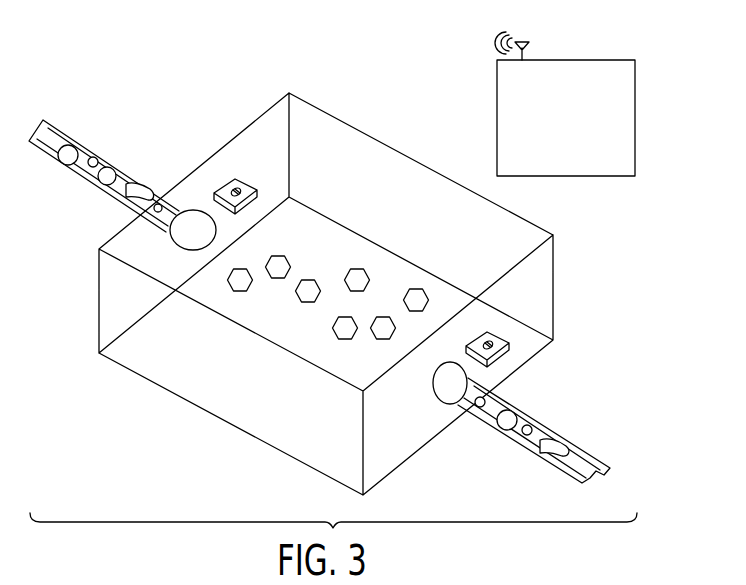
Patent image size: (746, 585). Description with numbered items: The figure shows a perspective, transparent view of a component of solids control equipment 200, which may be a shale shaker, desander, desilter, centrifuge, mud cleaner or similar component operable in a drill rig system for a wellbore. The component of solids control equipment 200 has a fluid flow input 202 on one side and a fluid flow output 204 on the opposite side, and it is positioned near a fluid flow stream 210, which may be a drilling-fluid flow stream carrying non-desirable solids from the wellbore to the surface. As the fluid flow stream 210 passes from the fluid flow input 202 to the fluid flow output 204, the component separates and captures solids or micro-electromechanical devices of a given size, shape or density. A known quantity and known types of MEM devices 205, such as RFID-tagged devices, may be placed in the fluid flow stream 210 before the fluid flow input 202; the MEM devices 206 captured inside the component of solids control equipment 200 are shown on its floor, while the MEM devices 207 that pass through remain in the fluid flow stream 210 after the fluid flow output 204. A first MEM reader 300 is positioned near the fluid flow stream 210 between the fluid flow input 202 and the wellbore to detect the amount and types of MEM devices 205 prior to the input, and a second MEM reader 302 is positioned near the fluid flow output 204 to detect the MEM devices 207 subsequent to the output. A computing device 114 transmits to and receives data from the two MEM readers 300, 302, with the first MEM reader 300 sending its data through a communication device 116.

The component of solids control equipment 200 is at (289, 93).
The fluid flow input 202 is at (180, 250).
The fluid flow output 204 is at (440, 393).
The MEM devices 205 is at (96, 168).
The MEM devices 206 is at (308, 303).
The MEM devices 207 is at (530, 444).
The fluid flow stream 210 is at (37, 128).
The first MEM reader 300 is at (257, 192).
The second MEM reader 302 is at (511, 351).
The computing device 114 is at (635, 118).
The communication device 116 is at (528, 44).